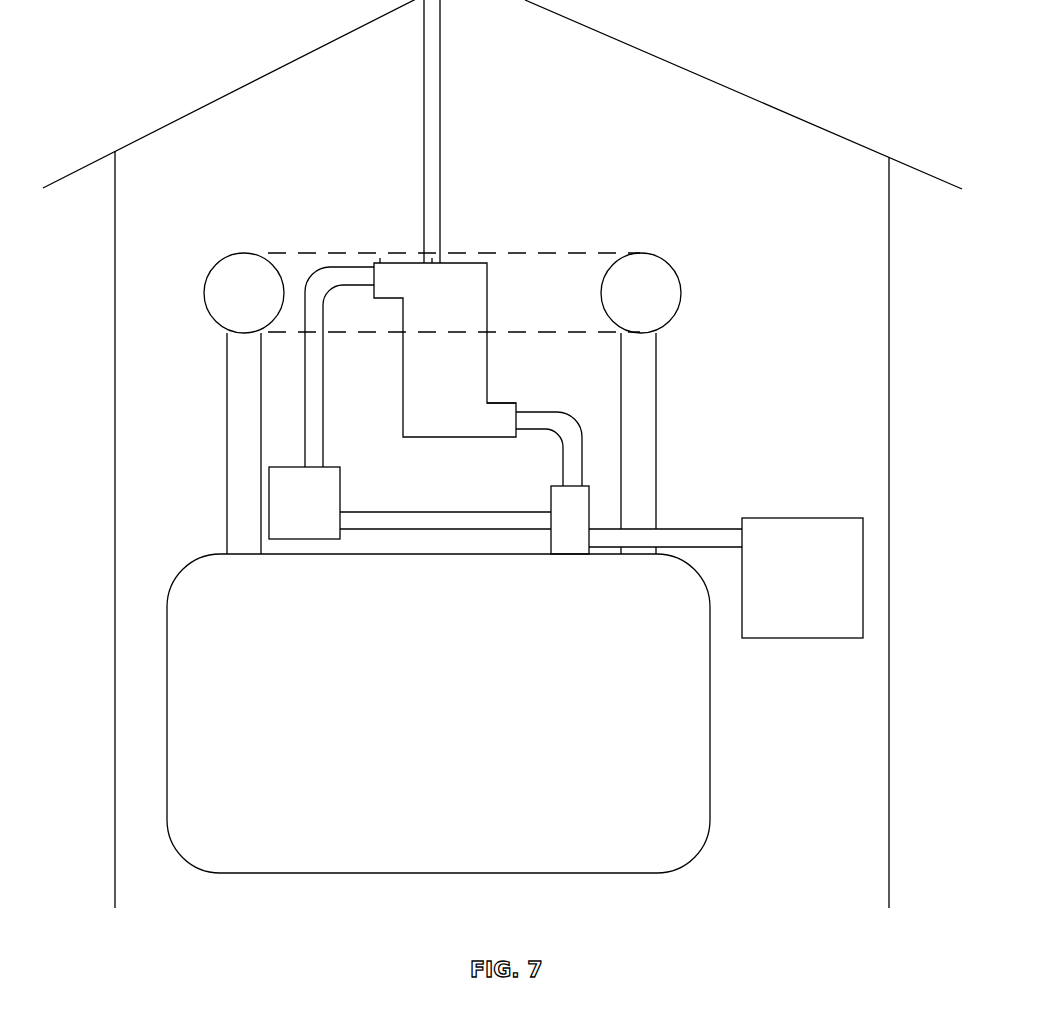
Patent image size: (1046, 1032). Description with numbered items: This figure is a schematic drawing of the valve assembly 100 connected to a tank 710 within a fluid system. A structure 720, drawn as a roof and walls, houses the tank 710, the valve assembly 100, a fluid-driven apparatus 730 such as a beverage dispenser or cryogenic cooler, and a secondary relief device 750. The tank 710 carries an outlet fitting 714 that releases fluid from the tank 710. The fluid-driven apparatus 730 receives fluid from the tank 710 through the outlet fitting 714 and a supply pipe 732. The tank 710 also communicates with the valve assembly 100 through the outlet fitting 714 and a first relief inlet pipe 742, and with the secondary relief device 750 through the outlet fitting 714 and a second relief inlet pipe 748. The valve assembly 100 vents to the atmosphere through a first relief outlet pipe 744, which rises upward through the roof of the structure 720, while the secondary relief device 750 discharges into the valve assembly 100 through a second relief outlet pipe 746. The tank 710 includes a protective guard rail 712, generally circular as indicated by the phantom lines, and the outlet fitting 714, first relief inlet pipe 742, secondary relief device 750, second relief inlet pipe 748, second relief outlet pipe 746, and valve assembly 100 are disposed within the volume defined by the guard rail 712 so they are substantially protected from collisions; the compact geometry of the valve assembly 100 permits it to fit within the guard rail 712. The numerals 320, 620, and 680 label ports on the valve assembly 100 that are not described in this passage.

The valve assembly 100 is at (464, 360).
The outlet 320 is at (497, 403).
The inlet connector 620 is at (433, 262).
The supply connector 680 is at (388, 262).
The tank 710 is at (458, 725).
The protective guard rail 712 is at (660, 255).
The outlet fitting 714 is at (551, 490).
The structure 720 is at (275, 68).
The fluid-driven apparatus 730 is at (820, 590).
The supply pipe 732 is at (688, 529).
The first relief inlet pipe 742 is at (537, 412).
The first relief outlet pipe 744 is at (424, 130).
The second relief outlet pipe 746 is at (324, 412).
The second relief inlet pipe 748 is at (397, 512).
The secondary relief device 750 is at (325, 513).